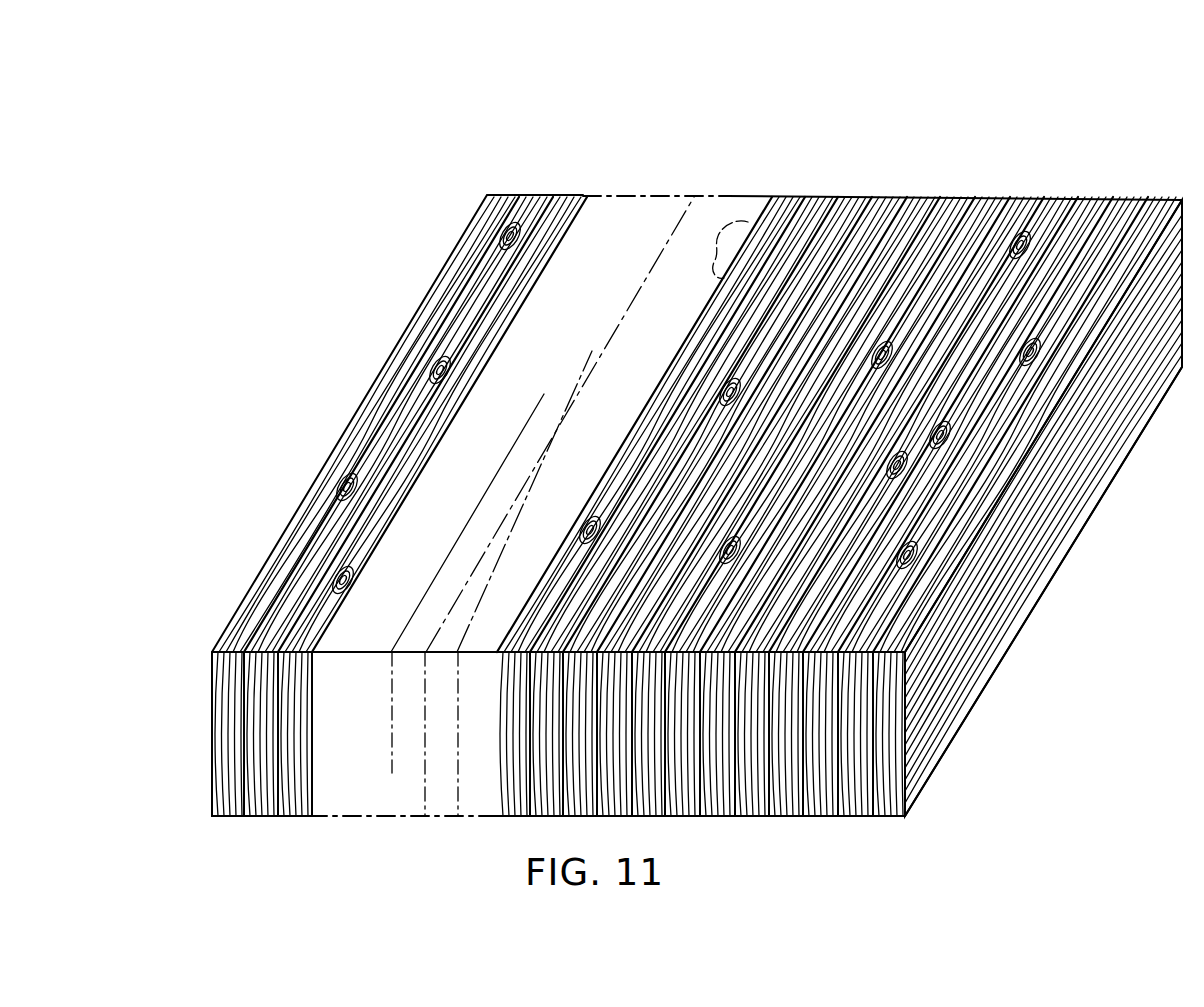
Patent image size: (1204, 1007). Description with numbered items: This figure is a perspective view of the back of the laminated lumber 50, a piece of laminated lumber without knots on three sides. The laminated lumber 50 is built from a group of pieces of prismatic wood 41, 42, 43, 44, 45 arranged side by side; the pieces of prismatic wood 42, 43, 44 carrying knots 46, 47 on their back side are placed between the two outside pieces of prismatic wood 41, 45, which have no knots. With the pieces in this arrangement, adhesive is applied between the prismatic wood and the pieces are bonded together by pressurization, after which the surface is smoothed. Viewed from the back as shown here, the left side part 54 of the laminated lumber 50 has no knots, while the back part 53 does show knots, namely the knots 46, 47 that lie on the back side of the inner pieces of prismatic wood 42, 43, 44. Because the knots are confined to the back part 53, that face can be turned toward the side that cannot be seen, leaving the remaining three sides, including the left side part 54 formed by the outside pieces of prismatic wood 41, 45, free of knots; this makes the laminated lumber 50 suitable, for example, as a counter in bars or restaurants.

The laminated lumber 50 is at (614, 100).
The prismatic wood 41 is at (1170, 200).
The prismatic wood 42 is at (1132, 200).
The prismatic wood 43 is at (1096, 200).
The prismatic wood 44 is at (1058, 200).
The prismatic wood 45 is at (505, 193).
The knot 46 is at (916, 572).
The knot 47 is at (1042, 358).
The back part 53 is at (843, 223).
The left side part 54 is at (1030, 523).